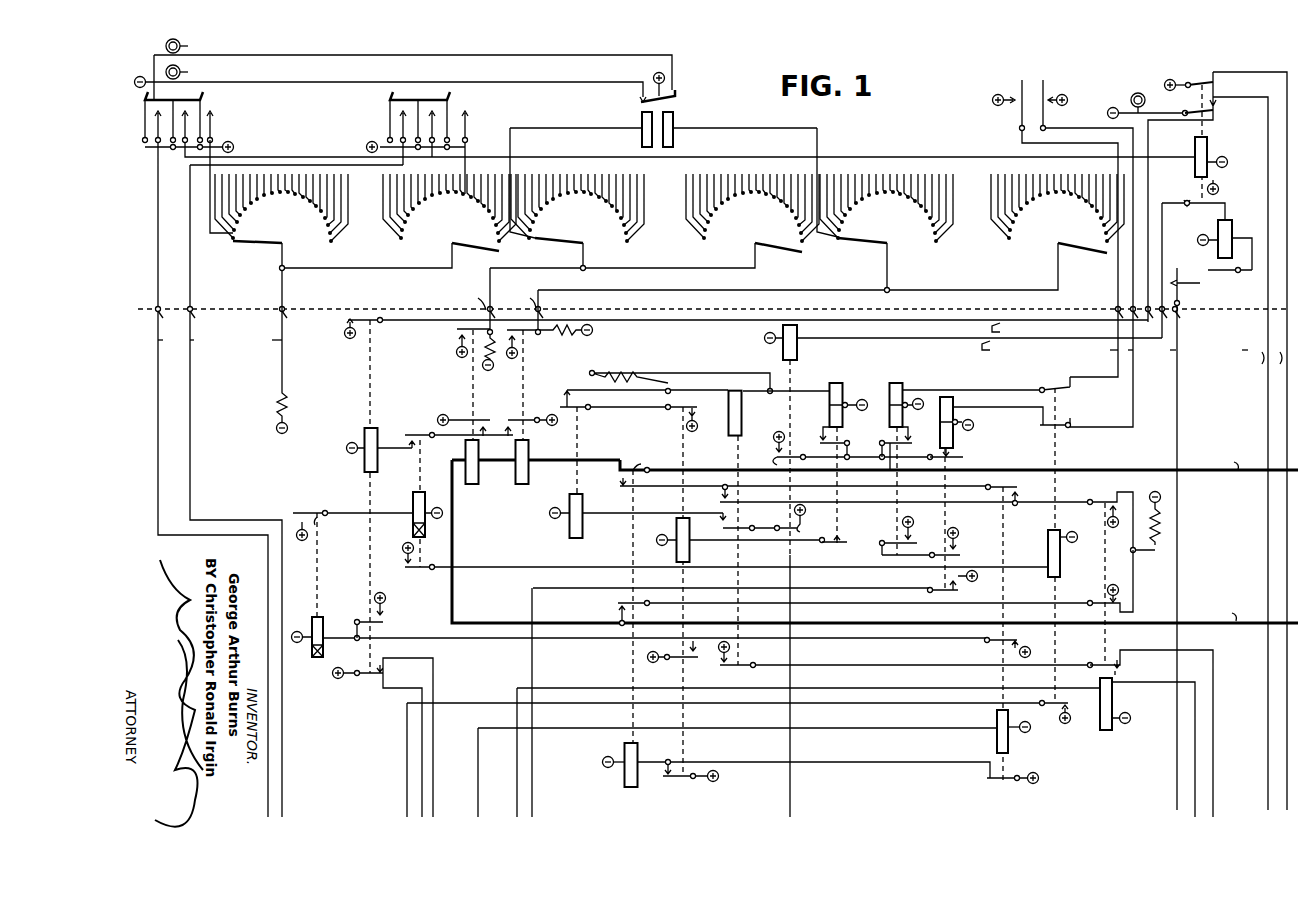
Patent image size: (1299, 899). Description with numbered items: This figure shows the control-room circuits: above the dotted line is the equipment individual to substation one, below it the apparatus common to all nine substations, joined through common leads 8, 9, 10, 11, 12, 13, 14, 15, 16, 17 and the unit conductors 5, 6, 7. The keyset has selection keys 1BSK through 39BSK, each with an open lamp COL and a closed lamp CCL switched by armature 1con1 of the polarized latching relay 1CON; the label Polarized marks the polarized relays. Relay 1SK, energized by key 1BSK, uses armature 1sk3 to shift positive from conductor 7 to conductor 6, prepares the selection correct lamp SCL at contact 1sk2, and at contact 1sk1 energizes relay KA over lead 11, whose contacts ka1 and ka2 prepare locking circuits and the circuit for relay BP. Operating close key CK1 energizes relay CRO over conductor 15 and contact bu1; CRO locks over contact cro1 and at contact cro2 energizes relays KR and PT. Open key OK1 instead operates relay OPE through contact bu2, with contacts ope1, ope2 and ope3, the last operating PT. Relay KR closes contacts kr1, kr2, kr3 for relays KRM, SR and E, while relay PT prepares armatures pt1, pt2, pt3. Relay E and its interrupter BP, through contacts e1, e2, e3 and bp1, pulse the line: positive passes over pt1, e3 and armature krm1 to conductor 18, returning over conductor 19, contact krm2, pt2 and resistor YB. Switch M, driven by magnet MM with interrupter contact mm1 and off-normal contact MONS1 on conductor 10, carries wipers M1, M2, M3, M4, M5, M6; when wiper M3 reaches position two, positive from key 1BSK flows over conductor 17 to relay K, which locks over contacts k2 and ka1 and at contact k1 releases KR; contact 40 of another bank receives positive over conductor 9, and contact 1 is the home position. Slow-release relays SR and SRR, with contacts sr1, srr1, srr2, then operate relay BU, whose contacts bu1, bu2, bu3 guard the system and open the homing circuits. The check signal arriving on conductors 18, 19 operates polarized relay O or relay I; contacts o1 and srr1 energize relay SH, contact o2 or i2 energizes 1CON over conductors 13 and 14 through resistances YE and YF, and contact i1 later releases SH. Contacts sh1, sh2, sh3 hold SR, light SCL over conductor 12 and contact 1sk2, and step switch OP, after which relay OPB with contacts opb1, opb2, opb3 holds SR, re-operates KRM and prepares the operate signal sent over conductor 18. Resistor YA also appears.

The column lamp COL is at (195, 47).
The column clear lamp CCL is at (195, 73).
The bank switch 1 1BSK is at (203, 97).
The bank switch 39 39BSK is at (450, 97).
The contact of relay 1CON 1con1 is at (672, 80).
The polarized relay 1CON is at (673, 120).
The selector M3 is at (331, 256).
The selector M6 is at (449, 212).
The selector M1 is at (622, 253).
The selector M4 is at (752, 213).
The selector M2 is at (798, 253).
The selector M5 is at (1057, 213).
The contact 1 of selector 1 is at (221, 241).
The contact 40 of selector 40 is at (459, 205).
The key CK1 is at (1015, 96).
The key OK1 is at (1046, 100).
The lamp SCL is at (1147, 93).
The contact of relay 1SK 1sk3 is at (1204, 82).
The contact of relay 1SK 1sk2 is at (1199, 197).
The contact of relay 1SK 1sk1 is at (1186, 200).
The relay 1SK is at (1207, 143).
The relay MM is at (1226, 220).
The contact of relay MM mm1 is at (1210, 270).
The monitor lead MONS1 is at (1180, 295).
The lead 12 is at (994, 330).
The lead 11 is at (989, 349).
The lead 15 is at (1104, 351).
The lead 16 is at (1140, 351).
The lead 10 is at (1183, 351).
The lead 5 is at (1240, 351).
The lead 6 is at (1258, 353).
The lead 7 is at (1276, 353).
The lead 9 is at (165, 340).
The lead 8 is at (197, 340).
The lead 17 is at (267, 340).
The lead 13 is at (473, 298).
The lead 14 is at (524, 298).
The lead 18 is at (959, 463).
The lead 19 is at (875, 541).
The resistor YA is at (286, 401).
The resistor YE is at (498, 352).
The resistor YF is at (560, 340).
The resistor YB is at (1160, 527).
The contact of relay SH sh2 is at (362, 309).
The contact of relay SH sh1 is at (385, 620).
The contact of relay SH sh3 is at (368, 664).
The relay SH is at (365, 428).
The contact of relay O o2 is at (461, 329).
The contact of relay O o1 is at (468, 411).
The polarized relay O is at (531, 462).
The contact of relay I i2 is at (544, 342).
The contact of relay I i1 is at (526, 411).
The polarized relay I is at (528, 448).
The polarized relays O and I Polarized is at (518, 498).
The contact of relay SRR srr1 is at (423, 434).
The contact of relay SRR srr2 is at (420, 570).
The relay SRR is at (418, 490).
The contact of relay SR sr1 is at (353, 526).
The relay SR is at (322, 617).
The relay BP is at (579, 495).
The contact of relay BP bp1 is at (588, 410).
The contact of relay KR kr3 is at (684, 408).
The contact of relay KR kr2 is at (672, 657).
The contact of relay KR kr1 is at (678, 780).
The relay KR is at (677, 528).
The relay E is at (743, 413).
The contact of relay E e3 is at (745, 488).
The contact of relay E e2 is at (745, 514).
The contact of relay E e1 is at (740, 662).
The relay KA is at (797, 352).
The contact of relay KA ka1 is at (771, 440).
The contact of relay KA ka2 is at (813, 519).
The relay K is at (836, 383).
The contact of relay K k2 is at (840, 440).
The contact of relay K k1 is at (842, 540).
The relay CRO is at (892, 383).
The contact of relay CRO cro1 is at (880, 478).
The contact of relay CRO cro2 is at (893, 530).
The contact of relay BU bu1 is at (1054, 382).
The contact of relay BU bu2 is at (1060, 415).
The contact of relay BU bu3 is at (1060, 722).
The relay BU is at (1048, 530).
The relay OPE is at (953, 412).
The contact of relay OPE ope1 is at (966, 445).
The contact of relay OPE ope2 is at (964, 544).
The contact of relay OPE ope3 is at (928, 590).
The contact of relay KRM krm1 is at (638, 462).
The contact of relay KRM krm2 is at (615, 603).
The relay KRM is at (625, 748).
The contact of relay OPB opb3 is at (1005, 484).
The contact of relay OPB opb1 is at (1000, 644).
The contact of relay OPB opb2 is at (1010, 775).
The relay OPB is at (997, 715).
The contact of relay PT pt1 is at (1106, 498).
The contact of relay PT pt2 is at (1104, 600).
The contact of relay PT pt3 is at (1102, 663).
The relay PT is at (1112, 702).